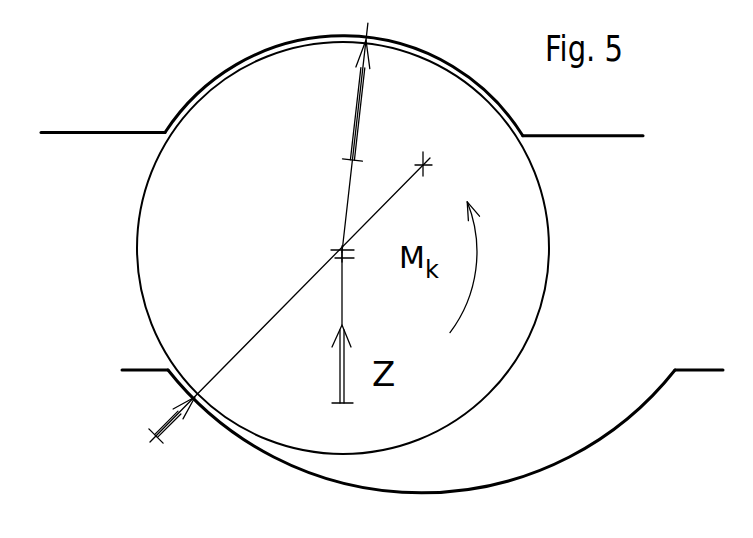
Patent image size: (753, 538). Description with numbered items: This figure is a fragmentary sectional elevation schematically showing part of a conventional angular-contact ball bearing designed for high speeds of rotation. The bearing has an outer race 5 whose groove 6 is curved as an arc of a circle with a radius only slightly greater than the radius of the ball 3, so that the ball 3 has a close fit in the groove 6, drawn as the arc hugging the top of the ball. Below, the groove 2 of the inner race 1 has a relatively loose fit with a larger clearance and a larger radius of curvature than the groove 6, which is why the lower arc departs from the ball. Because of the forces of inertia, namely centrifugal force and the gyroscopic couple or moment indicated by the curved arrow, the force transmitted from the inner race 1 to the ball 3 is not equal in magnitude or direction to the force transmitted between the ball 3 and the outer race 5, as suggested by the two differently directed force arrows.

The inner race 1 is at (690, 368).
The groove 2 is at (545, 472).
The ball 3 is at (547, 257).
The outer race 5 is at (585, 135).
The groove 6 is at (227, 68).